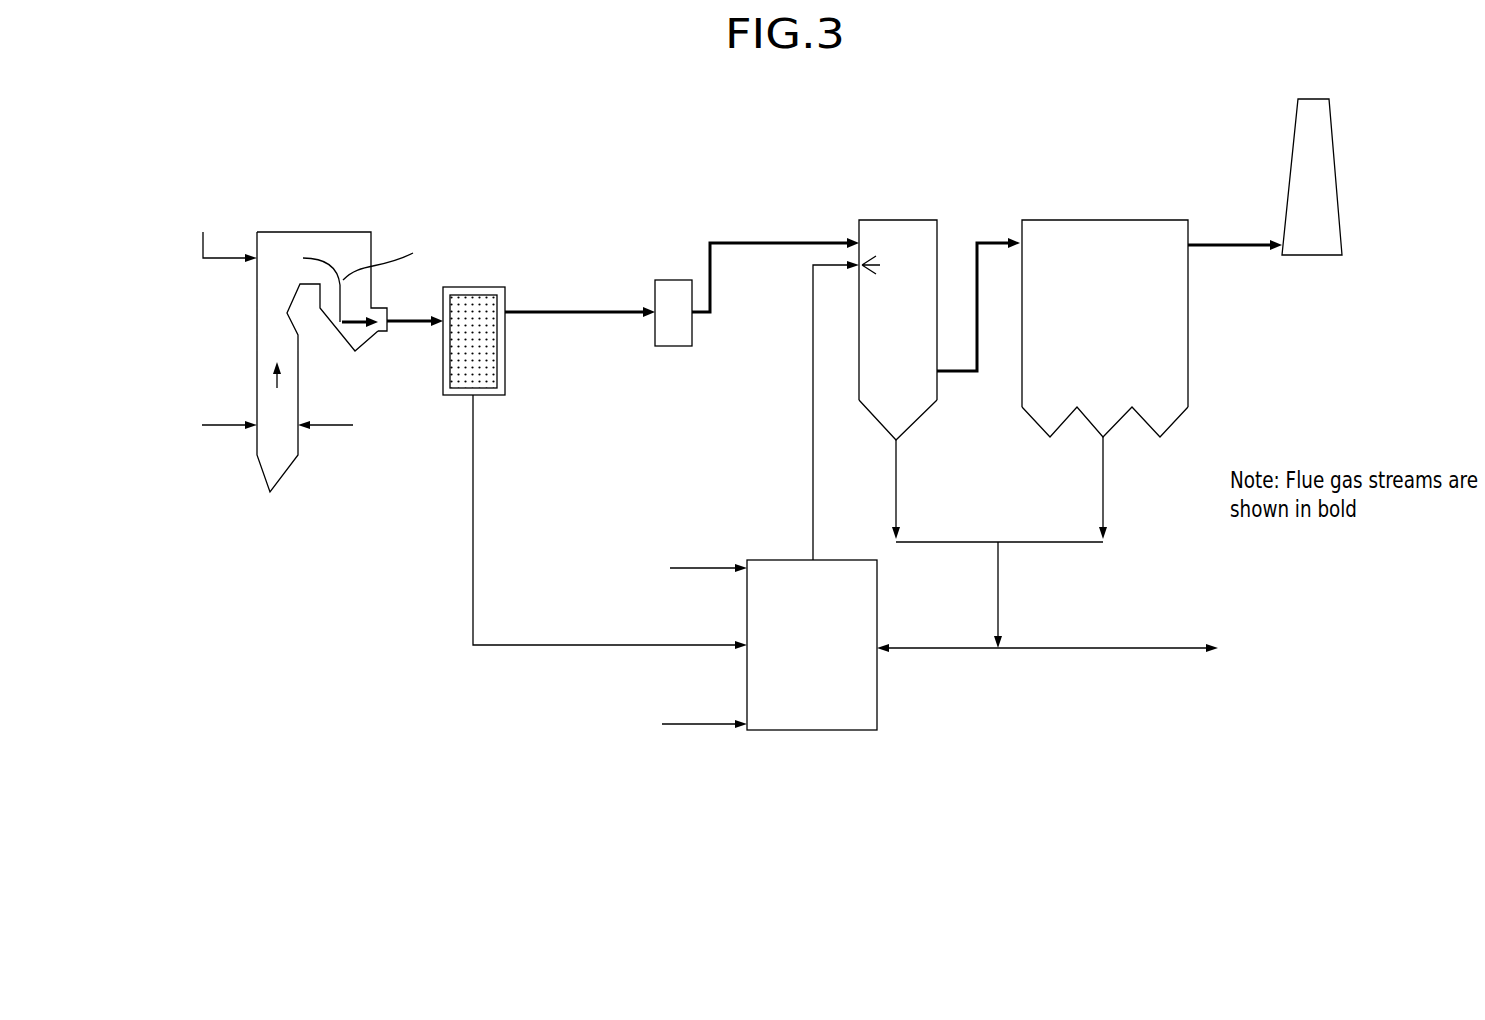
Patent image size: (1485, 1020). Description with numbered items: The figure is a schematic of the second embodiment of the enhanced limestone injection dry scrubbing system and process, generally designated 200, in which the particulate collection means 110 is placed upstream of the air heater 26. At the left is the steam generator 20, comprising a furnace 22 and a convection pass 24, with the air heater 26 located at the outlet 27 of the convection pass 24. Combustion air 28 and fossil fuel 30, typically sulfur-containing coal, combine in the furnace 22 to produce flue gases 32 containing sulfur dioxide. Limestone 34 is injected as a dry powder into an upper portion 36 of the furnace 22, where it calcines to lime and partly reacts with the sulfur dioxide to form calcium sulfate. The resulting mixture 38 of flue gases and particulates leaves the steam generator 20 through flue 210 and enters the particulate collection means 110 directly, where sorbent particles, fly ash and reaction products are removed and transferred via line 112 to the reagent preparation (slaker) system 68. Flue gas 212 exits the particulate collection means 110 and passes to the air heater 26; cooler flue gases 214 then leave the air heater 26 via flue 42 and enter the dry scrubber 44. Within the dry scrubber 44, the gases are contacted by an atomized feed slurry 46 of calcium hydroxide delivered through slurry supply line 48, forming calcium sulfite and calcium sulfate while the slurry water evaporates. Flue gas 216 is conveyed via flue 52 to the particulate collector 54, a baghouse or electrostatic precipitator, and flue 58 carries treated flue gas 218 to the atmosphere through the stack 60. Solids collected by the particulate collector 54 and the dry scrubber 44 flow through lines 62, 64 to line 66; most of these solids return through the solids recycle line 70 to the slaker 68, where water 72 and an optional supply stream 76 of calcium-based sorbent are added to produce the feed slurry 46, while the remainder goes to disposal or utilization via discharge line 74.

The steam generator 20 is at (333, 170).
The furnace 22 is at (267, 352).
The convection pass 24 is at (337, 250).
The air heater 26 is at (675, 337).
The outlet 27 is at (378, 334).
The combustion air 28 is at (335, 430).
The fossil fuel 30 is at (222, 430).
The flue gases 32 is at (276, 437).
The limestone 34 is at (212, 262).
The upper portion of the furnace 36 is at (273, 242).
The mixture of flue gases and particulates 38 is at (403, 294).
The flue 42 is at (712, 283).
The dry scrubber 44 is at (908, 316).
The feed slurry 46 is at (869, 262).
The slurry supply line 48 is at (813, 372).
The flue 52 is at (968, 374).
The particulate collector 54 is at (1060, 228).
The flue 58 is at (1215, 250).
The stack 60 is at (1302, 130).
The line 62 is at (1105, 500).
The line 64 is at (898, 500).
The line 66 is at (998, 578).
The reagent preparation (slaker) system 68 is at (823, 566).
The solids recycle line 70 is at (960, 652).
The water 72 is at (686, 730).
The discharge line 74 is at (1100, 652).
The supply stream of calcium-based sorbent 76 is at (705, 566).
The particulate collection means 110 is at (483, 378).
The line 112 is at (470, 608).
The E-LIDS system and process 200 is at (854, 115).
The flue 210 is at (413, 328).
The flue gas 212 is at (601, 295).
The cooler flue gases 214 is at (831, 226).
The flue gas 216 is at (1007, 223).
The flue gas 218 is at (1259, 227).